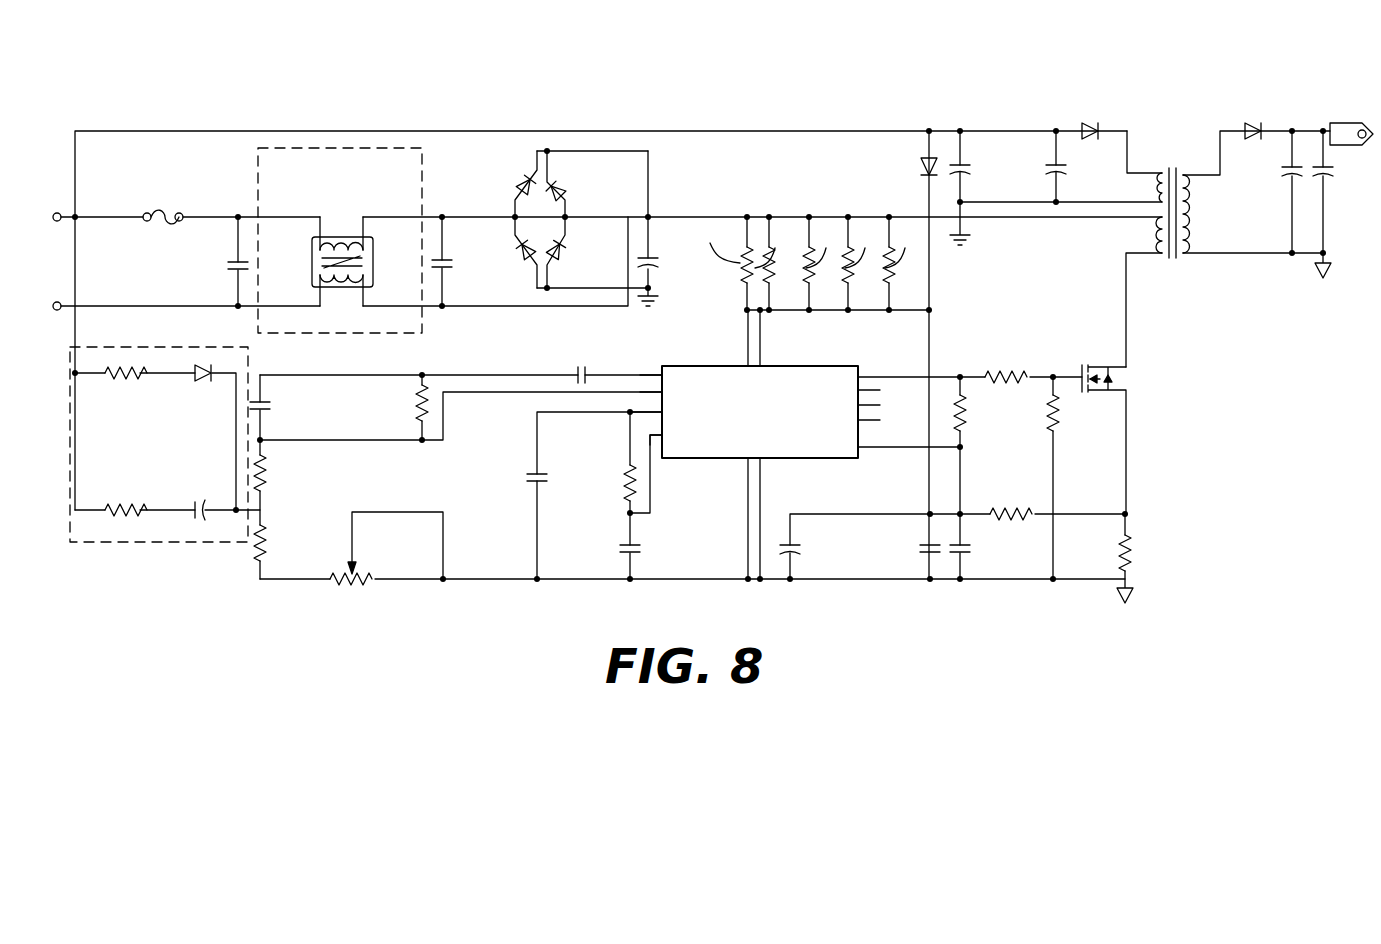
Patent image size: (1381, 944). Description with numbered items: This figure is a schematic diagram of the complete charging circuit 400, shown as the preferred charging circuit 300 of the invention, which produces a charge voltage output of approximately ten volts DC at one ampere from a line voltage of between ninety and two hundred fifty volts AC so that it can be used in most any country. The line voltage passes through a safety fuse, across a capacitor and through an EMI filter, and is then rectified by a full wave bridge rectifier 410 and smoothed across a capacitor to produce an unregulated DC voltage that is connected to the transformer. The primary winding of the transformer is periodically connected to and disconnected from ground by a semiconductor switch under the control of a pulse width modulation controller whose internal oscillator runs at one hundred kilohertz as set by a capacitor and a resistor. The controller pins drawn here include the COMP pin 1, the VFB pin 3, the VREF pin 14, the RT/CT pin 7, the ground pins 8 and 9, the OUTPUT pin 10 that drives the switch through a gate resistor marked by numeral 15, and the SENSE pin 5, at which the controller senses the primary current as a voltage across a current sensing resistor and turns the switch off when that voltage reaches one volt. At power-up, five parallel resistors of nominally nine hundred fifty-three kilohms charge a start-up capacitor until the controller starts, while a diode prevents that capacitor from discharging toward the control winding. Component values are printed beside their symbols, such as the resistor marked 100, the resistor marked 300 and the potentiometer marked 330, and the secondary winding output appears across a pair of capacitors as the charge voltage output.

The charging circuit 400 is at (674, 122).
The rectifier bridge 410 is at (528, 180).
The gate resistor R37 15 is at (1021, 359).
The resistor R19 100 is at (167, 503).
The charging circuit 300 is at (1042, 510).
The potentiometer R4 330 is at (385, 570).
The COMP pin 1 is at (651, 367).
The VFB pin 3 is at (651, 385).
The VREF pin 14 is at (646, 404).
The RT/CT pin 7 is at (656, 431).
The ground pin 8 is at (740, 518).
The ground pin 9 is at (767, 518).
The OUTPUT pin 10 is at (909, 367).
The SENSE pin 5 is at (909, 440).